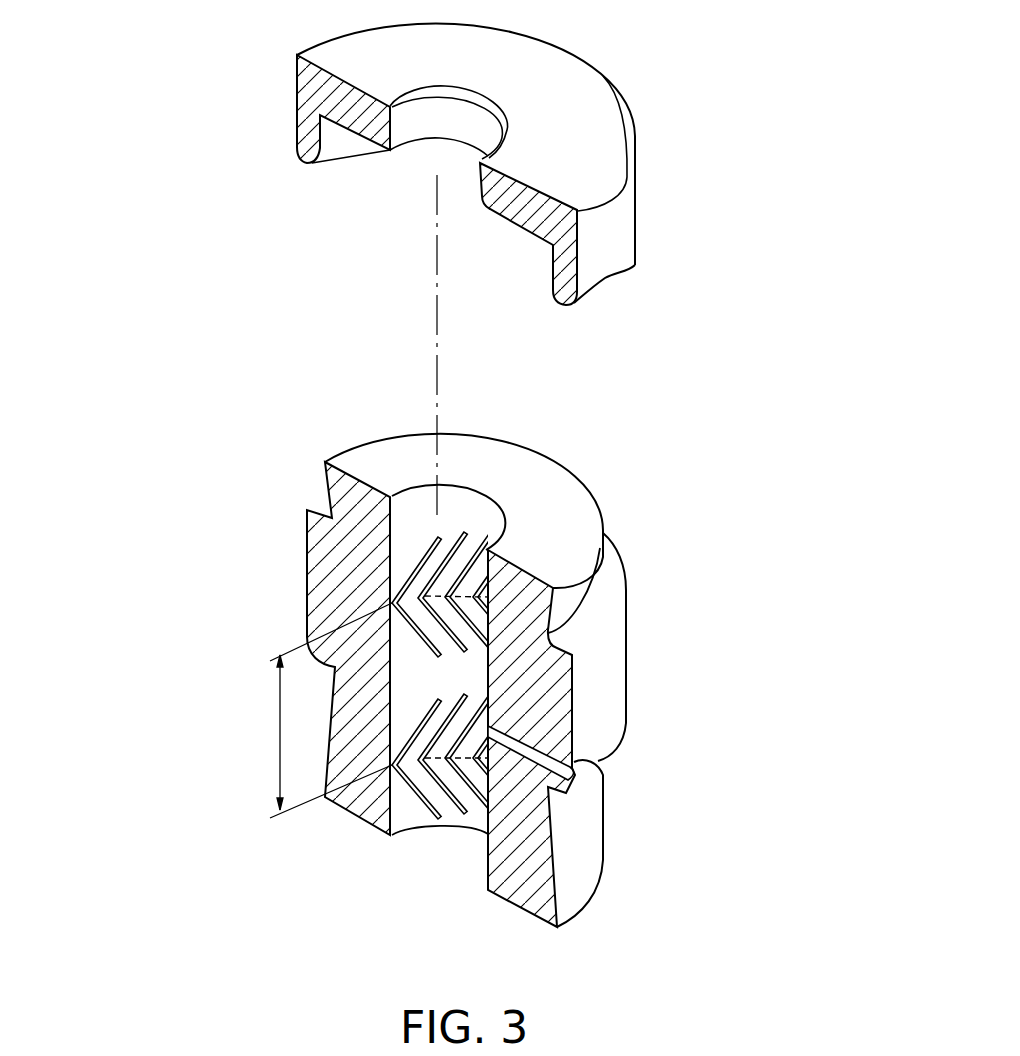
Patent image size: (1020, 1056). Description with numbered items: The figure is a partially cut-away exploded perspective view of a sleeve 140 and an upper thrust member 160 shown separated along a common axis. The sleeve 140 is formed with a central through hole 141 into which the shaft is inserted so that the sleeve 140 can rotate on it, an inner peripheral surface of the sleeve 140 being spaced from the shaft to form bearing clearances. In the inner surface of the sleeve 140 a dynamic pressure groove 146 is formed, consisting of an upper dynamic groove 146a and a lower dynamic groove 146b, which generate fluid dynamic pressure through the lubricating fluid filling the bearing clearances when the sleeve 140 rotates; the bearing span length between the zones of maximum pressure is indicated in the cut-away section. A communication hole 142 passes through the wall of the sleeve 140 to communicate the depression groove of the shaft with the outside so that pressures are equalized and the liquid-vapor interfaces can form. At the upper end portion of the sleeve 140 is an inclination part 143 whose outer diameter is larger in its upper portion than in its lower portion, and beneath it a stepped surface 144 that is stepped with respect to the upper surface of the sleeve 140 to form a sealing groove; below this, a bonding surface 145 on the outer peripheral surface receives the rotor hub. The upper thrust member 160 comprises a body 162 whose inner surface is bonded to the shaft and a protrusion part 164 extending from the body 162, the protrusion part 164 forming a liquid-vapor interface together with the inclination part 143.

The sleeve 140 is at (414, 646).
The through hole 141 is at (465, 518).
The communication hole 142 is at (576, 762).
The inclination part 143 is at (575, 587).
The stepped surface 144 is at (582, 630).
The bonding surface 145 is at (607, 705).
The dynamic pressure groove 146 is at (280, 675).
The upper dynamic groove 146a is at (394, 600).
The lower dynamic groove 146b is at (405, 742).
The upper thrust member 160 is at (584, 164).
The body 162 is at (595, 100).
The protrusion part 164 is at (540, 220).